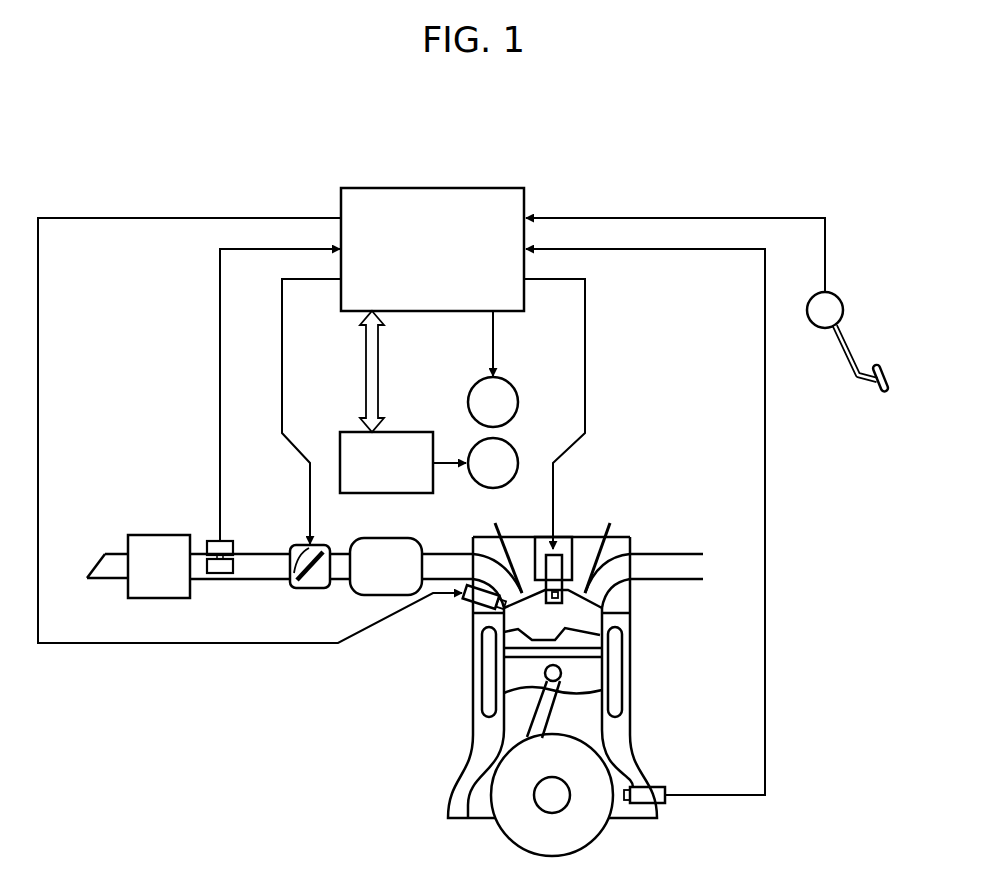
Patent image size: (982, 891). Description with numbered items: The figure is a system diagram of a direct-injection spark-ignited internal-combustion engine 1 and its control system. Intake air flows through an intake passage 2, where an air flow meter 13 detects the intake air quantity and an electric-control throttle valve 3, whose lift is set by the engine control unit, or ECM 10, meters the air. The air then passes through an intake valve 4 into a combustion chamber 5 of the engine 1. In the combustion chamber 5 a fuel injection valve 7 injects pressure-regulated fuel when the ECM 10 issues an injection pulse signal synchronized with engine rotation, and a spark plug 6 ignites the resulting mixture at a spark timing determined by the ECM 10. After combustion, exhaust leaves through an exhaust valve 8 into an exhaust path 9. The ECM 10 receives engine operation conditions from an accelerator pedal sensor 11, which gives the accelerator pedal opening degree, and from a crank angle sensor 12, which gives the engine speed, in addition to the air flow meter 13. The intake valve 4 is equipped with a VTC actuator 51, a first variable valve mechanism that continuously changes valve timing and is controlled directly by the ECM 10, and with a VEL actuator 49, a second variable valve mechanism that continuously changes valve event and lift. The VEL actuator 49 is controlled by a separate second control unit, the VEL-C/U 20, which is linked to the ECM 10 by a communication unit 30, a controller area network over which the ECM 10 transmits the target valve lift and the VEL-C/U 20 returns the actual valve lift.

The engine 1 is at (446, 813).
The intake passage 2 is at (105, 554).
The electric-control throttle valve 3 is at (292, 547).
The intake valve 4 is at (510, 556).
The combustion chamber 5 is at (523, 615).
The spark plug 6 is at (563, 540).
The fuel injection valve 7 is at (466, 610).
The exhaust valve 8 is at (612, 540).
The exhaust path 9 is at (673, 554).
The engine control unit (ECM) 10 is at (443, 188).
The accelerator pedal sensor 11 is at (843, 307).
The crank angle sensor 12 is at (665, 804).
The air flow meter 13 is at (207, 541).
The VEL control unit (VEL-C/U) 20 is at (410, 432).
The communication unit (CAN) 30 is at (366, 371).
The VEL actuator 49 is at (518, 462).
The VTC actuator 51 is at (517, 401).